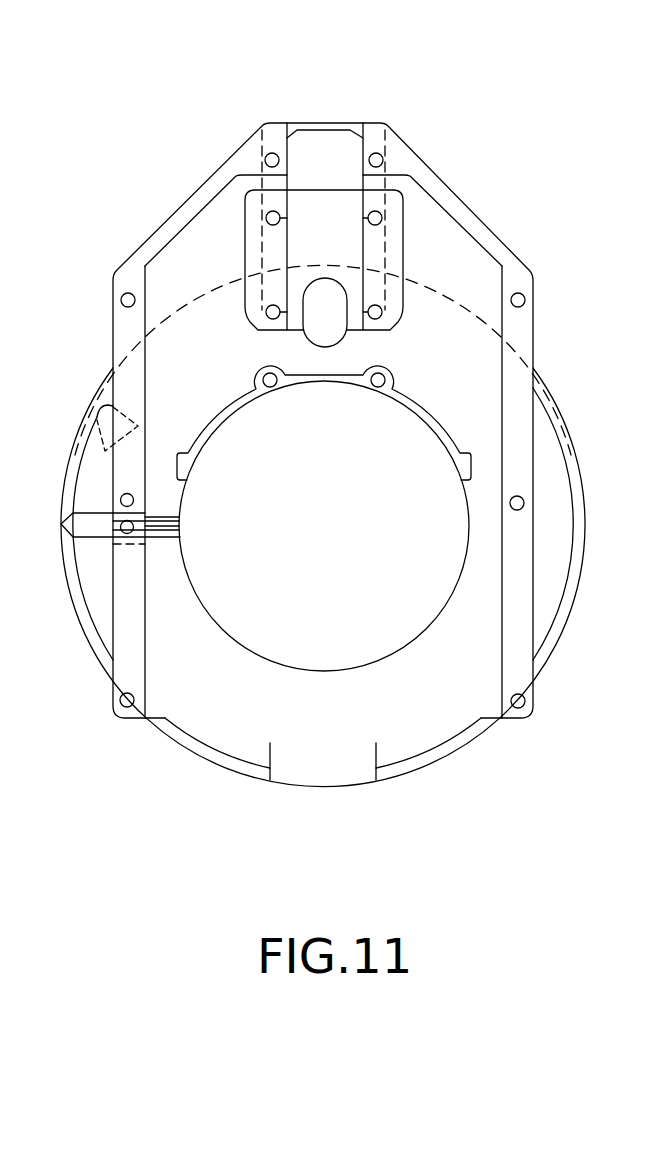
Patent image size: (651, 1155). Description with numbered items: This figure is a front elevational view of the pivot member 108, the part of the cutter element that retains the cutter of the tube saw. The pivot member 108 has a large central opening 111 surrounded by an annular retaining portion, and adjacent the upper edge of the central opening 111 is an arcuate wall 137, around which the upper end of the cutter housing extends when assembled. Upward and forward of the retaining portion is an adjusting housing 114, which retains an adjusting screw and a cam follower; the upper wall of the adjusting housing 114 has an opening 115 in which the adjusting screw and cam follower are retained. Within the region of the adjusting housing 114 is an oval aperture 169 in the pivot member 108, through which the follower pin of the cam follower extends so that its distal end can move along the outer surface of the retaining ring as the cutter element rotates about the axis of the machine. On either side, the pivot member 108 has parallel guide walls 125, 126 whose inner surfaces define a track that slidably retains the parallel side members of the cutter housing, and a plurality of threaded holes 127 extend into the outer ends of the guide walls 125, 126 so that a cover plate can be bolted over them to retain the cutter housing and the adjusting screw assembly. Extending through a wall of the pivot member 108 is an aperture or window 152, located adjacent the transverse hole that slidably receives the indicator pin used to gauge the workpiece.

The pivot member 108 is at (397, 775).
The central opening 111 is at (222, 627).
The adjusting housing 114 is at (182, 228).
The opening 115 is at (347, 122).
The guide wall 125 is at (123, 650).
The guide wall 126 is at (515, 663).
The threaded holes 127 is at (122, 290).
The arcuate wall 137 is at (420, 417).
The aperture or window 152 is at (92, 403).
The oval aperture 169 is at (343, 313).